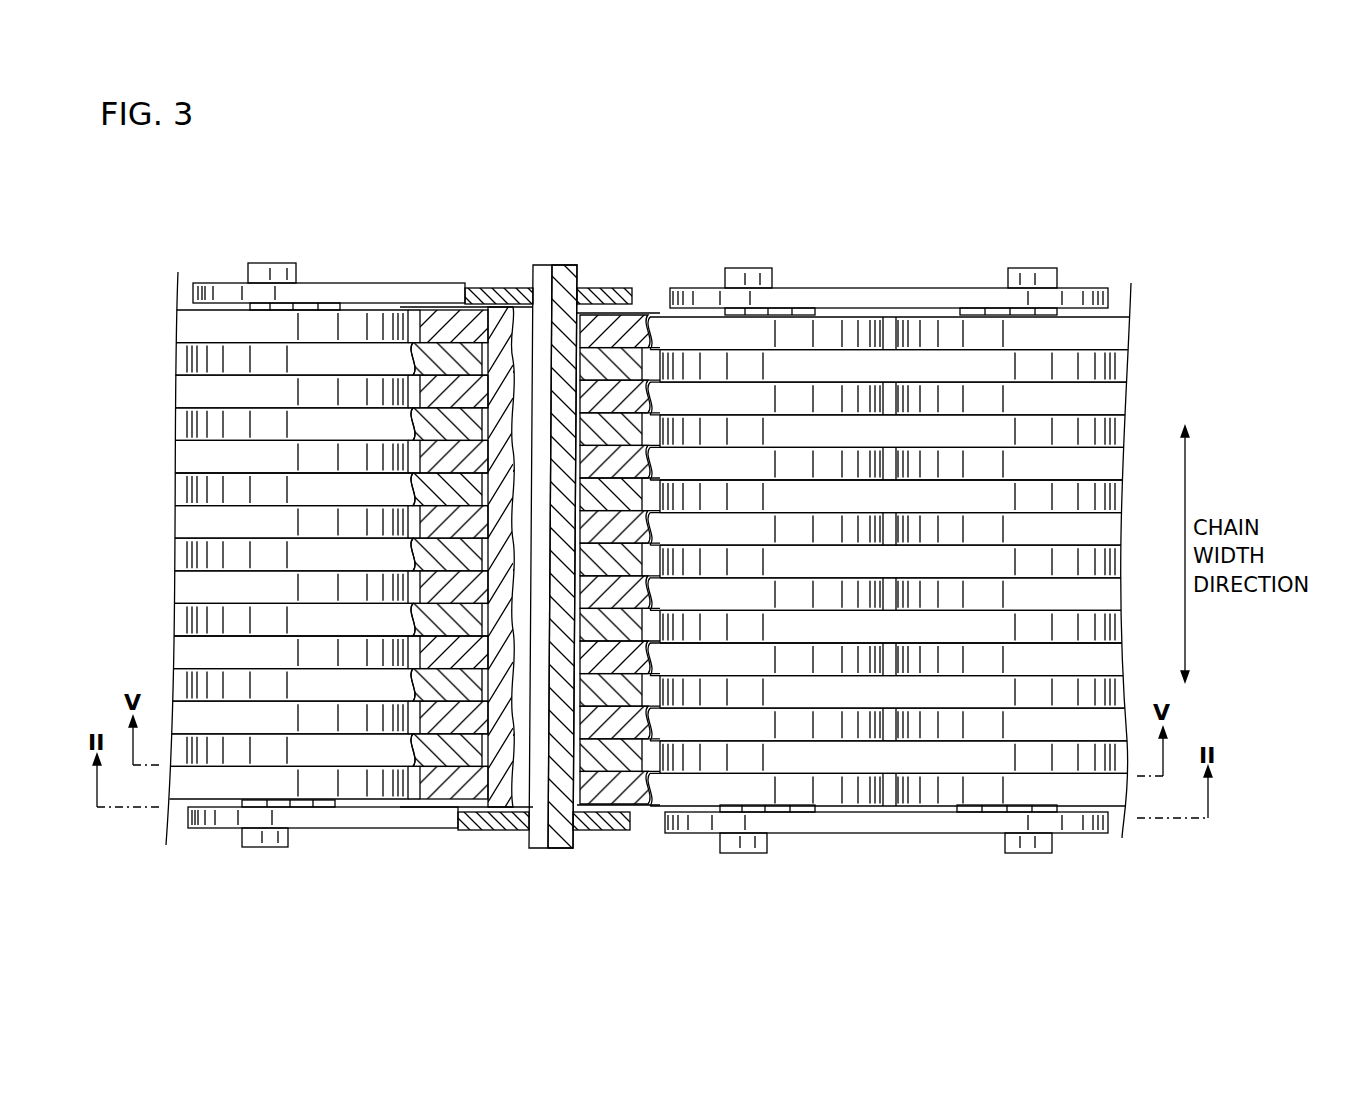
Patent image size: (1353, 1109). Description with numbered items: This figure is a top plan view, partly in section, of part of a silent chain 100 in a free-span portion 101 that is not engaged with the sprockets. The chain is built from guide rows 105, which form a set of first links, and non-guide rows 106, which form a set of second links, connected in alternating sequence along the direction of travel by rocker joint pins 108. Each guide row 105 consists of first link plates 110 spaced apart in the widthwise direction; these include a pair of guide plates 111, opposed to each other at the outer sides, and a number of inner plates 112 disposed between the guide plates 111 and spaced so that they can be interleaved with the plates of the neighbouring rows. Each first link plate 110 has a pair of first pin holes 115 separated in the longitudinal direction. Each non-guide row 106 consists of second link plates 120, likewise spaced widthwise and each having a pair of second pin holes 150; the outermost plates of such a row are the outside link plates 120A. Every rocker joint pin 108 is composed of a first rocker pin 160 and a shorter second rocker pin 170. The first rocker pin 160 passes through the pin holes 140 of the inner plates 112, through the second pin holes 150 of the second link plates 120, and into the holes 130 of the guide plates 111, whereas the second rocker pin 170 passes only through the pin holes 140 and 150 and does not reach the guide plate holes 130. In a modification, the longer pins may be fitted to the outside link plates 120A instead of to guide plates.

The chain 100 is at (1095, 154).
The free-span portion 101 is at (650, 497).
The guide row 105 is at (635, 212).
The non-guide row 106 is at (885, 153).
The rocker joint pin 108 is at (649, 609).
The first link plate 110 is at (975, 228).
The guide plate 111 is at (337, 291).
The inner plate 112 is at (630, 366).
The first pin hole 115 is at (649, 591).
The second link plate 120 is at (650, 551).
The outside link plate 120A is at (710, 330).
The guide plate hole 130 is at (537, 293).
The pin hole 140 is at (478, 750).
The second pin hole 150 is at (558, 838).
The first rocker pin 160 is at (575, 797).
The second rocker pin 170 is at (515, 793).